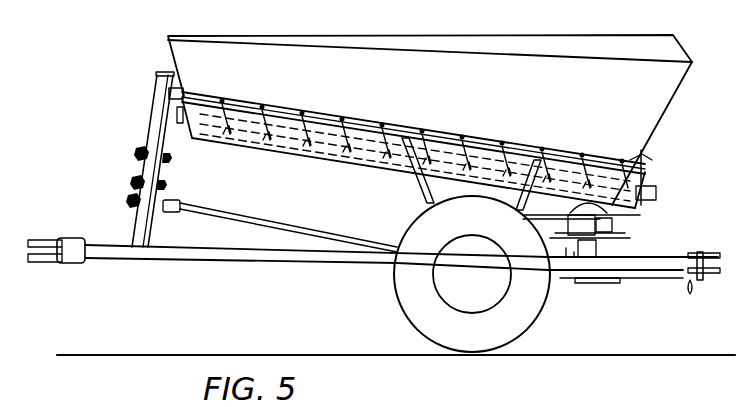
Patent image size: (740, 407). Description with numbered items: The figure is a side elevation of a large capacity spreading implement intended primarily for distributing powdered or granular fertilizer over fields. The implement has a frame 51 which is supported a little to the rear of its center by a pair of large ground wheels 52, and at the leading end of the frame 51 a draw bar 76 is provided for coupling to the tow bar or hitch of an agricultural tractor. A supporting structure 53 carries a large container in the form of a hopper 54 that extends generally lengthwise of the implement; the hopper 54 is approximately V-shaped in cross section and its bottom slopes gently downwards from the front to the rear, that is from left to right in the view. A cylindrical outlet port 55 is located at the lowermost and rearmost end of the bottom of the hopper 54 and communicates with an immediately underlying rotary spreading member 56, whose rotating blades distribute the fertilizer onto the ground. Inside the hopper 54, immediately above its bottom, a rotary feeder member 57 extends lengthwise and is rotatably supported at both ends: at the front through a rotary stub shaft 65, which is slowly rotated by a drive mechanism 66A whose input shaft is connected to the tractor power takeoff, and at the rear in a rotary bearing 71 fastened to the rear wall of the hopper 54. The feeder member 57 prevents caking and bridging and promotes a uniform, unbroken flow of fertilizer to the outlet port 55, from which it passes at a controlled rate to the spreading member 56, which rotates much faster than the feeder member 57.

The frame 51 is at (311, 258).
The ground wheels 52 is at (416, 318).
The supporting structure 53 is at (421, 190).
The hopper 54 is at (471, 44).
The outlet port 55 is at (612, 212).
The rotary spreading member 56 is at (660, 230).
The rotary feeder member 57 is at (404, 111).
The rotary stub shaft 65 is at (180, 112).
The drive mechanism 66A is at (160, 95).
The rotary bearing 71 is at (644, 180).
The draw bar 76 is at (50, 238).